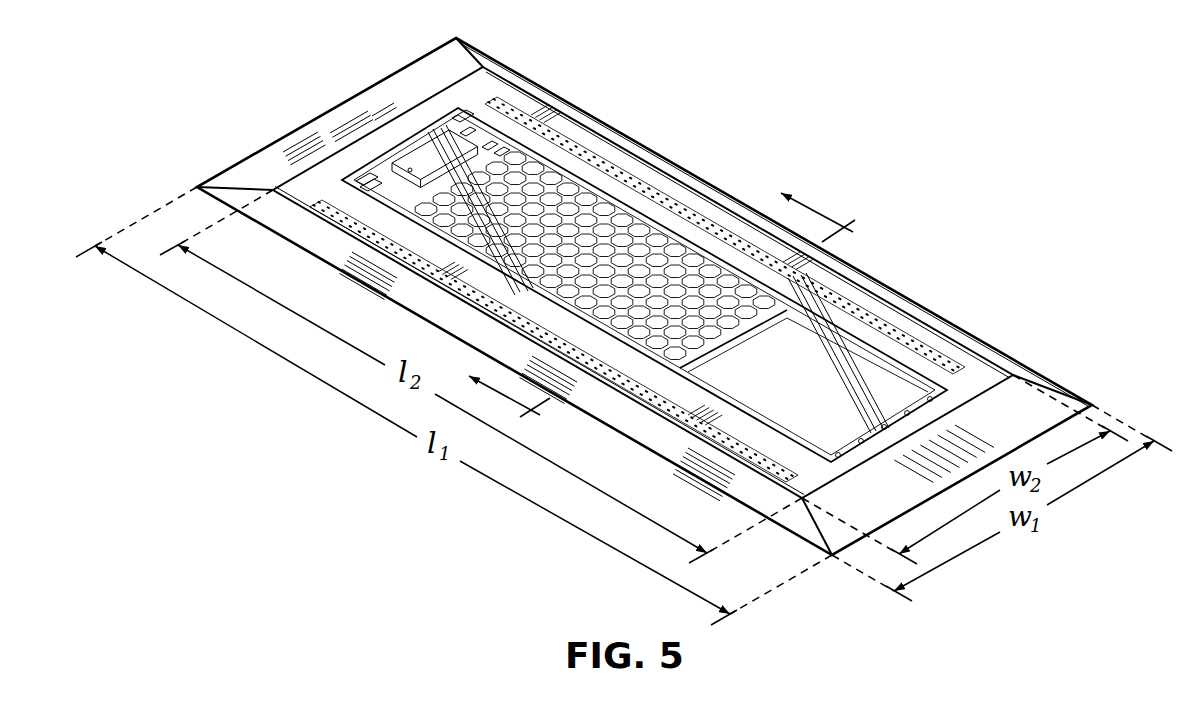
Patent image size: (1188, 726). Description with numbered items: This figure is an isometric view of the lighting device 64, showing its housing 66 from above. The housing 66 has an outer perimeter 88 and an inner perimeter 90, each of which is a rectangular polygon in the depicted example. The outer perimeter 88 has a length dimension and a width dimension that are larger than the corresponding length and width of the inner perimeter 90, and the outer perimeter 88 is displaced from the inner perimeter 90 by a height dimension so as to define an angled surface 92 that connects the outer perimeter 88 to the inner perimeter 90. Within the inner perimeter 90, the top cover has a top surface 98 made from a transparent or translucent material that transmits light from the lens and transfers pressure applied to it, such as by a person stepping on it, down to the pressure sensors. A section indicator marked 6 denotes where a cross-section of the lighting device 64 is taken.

The section line 6- 6 is at (672, 318).
The tray assembly 64 is at (613, 73).
The base plate 66 is at (616, 127).
The side rail 88 is at (286, 134).
The raised lip 90 is at (398, 122).
The corner flange 92 is at (273, 181).
The honeycomb grid panel 98 is at (652, 214).